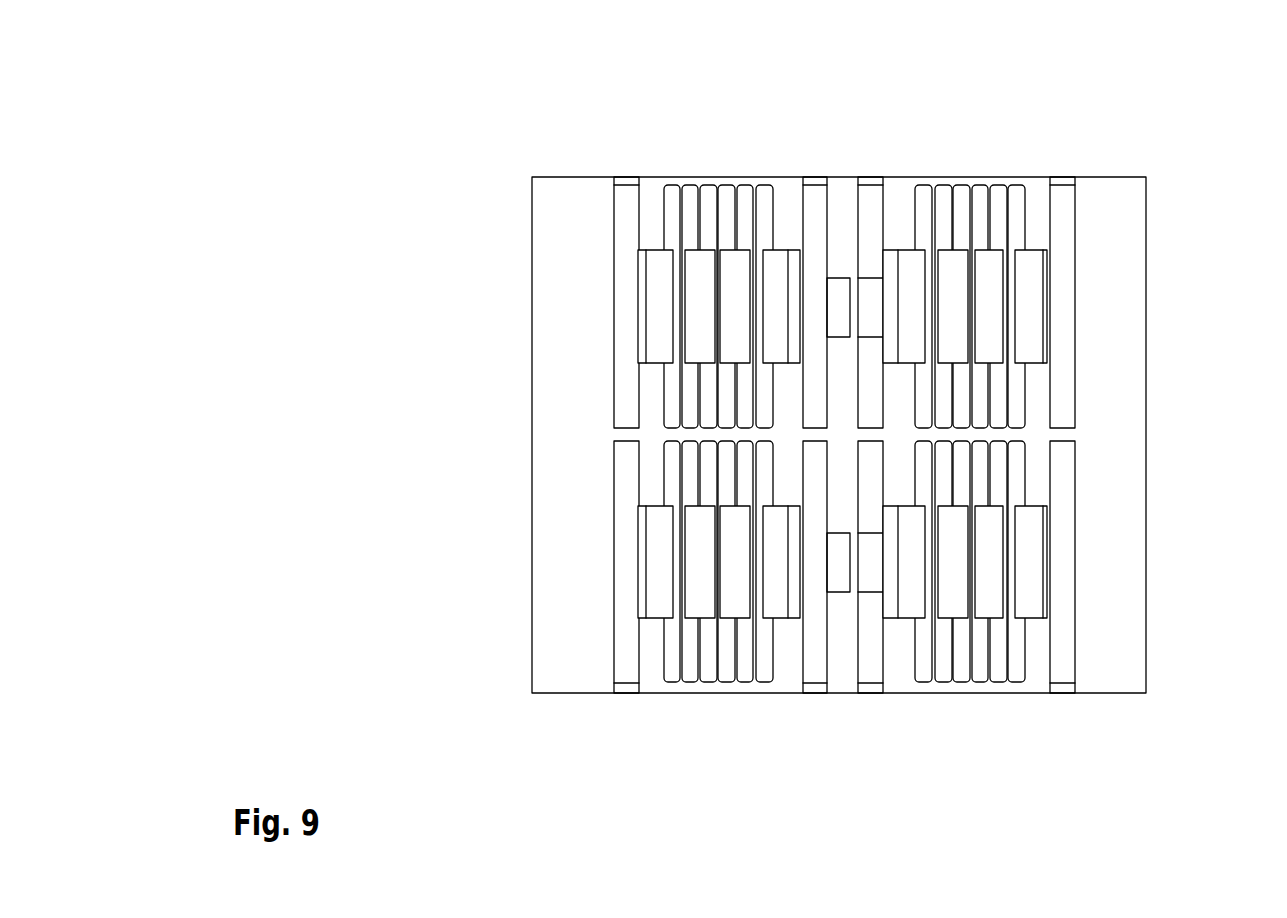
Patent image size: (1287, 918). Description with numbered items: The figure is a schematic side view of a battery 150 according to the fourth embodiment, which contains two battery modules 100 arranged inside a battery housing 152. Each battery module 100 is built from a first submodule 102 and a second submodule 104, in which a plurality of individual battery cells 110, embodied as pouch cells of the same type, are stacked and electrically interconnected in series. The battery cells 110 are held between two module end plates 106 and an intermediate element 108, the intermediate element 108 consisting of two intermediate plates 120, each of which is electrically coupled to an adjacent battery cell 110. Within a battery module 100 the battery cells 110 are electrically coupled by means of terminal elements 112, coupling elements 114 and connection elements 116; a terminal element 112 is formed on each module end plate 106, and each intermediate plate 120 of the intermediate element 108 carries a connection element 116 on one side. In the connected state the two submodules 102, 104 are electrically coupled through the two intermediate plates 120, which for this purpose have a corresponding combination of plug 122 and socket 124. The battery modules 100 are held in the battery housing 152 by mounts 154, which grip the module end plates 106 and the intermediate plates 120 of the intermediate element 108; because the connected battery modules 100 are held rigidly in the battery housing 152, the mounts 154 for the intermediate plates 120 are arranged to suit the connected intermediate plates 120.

The battery module 100 is at (521, 187).
The first submodule 102 is at (827, 165).
The second submodule 104 is at (1067, 163).
The module end plate 106 is at (635, 277).
The intermediate element 108 is at (883, 165).
The battery cell 110 is at (667, 207).
The terminal element 112 is at (622, 237).
The coupling element 114 is at (733, 267).
The connection element 116 is at (797, 263).
The intermediate plate 120 is at (877, 393).
The plug 122 is at (833, 287).
The socket 124 is at (875, 323).
The battery 150 is at (1150, 150).
The battery housing 152 is at (1147, 219).
The mount 154 is at (614, 232).